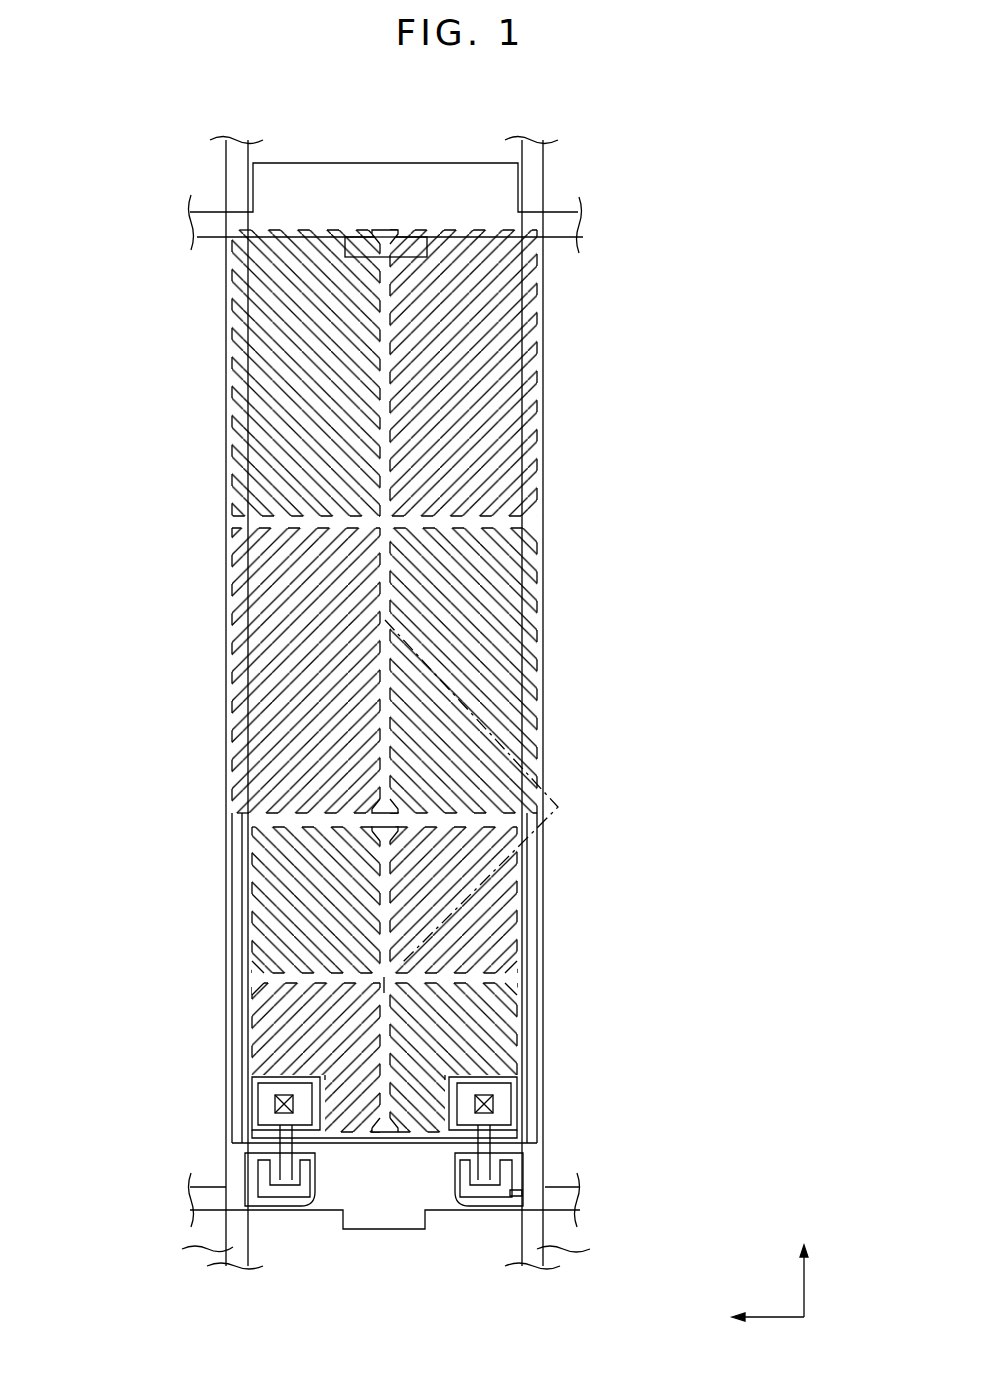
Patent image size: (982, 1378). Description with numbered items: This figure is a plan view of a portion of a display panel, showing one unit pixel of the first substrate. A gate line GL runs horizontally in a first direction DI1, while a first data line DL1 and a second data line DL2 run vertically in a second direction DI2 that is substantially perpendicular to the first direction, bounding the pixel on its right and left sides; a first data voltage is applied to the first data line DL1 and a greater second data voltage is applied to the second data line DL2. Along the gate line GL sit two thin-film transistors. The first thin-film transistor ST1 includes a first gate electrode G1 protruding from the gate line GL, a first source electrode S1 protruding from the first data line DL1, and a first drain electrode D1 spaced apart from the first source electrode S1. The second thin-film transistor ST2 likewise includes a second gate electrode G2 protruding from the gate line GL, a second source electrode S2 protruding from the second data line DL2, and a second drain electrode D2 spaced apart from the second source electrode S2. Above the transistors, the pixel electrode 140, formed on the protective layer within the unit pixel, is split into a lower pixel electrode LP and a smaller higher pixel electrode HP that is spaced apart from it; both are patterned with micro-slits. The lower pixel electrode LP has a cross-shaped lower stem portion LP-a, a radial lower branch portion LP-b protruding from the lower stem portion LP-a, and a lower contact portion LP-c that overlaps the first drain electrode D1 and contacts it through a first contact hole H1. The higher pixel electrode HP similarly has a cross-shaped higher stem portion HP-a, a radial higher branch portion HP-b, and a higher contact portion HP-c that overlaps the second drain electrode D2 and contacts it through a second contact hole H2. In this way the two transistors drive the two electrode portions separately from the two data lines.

The pixel electrode 140 is at (383, 686).
The lower pixel electrode LP is at (458, 686).
The lower stem portion LP-a is at (530, 530).
The lower branch portion LP-b is at (515, 642).
The lower contact portion LP-c is at (436, 978).
The higher pixel electrode HP is at (299, 982).
The higher stem portion HP-a is at (258, 980).
The higher branch portion HP-b is at (252, 933).
The higher contact portion HP-c is at (322, 1077).
The first thin-film transistor ST1 is at (565, 1144).
The second thin-film transistor ST2 is at (206, 1144).
The first gate electrode G1 is at (518, 1175).
The second gate electrode G2 is at (250, 1172).
The first source electrode S1 is at (520, 1188).
The second source electrode S2 is at (262, 1190).
The first drain electrode D1 is at (490, 1160).
The second drain electrode D2 is at (279, 1160).
The first contact hole H1 is at (474, 1104).
The second contact hole H2 is at (294, 1104).
The gate line GL is at (571, 1198).
The first data line DL1 is at (571, 703).
The second data line DL2 is at (198, 703).
The first direction DI1 is at (745, 1317).
The second direction DI2 is at (805, 1268).